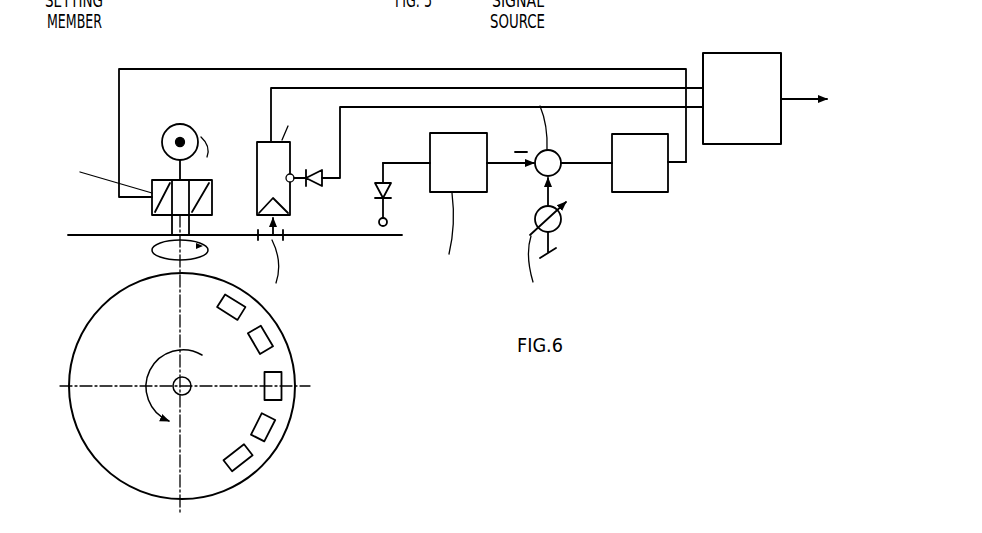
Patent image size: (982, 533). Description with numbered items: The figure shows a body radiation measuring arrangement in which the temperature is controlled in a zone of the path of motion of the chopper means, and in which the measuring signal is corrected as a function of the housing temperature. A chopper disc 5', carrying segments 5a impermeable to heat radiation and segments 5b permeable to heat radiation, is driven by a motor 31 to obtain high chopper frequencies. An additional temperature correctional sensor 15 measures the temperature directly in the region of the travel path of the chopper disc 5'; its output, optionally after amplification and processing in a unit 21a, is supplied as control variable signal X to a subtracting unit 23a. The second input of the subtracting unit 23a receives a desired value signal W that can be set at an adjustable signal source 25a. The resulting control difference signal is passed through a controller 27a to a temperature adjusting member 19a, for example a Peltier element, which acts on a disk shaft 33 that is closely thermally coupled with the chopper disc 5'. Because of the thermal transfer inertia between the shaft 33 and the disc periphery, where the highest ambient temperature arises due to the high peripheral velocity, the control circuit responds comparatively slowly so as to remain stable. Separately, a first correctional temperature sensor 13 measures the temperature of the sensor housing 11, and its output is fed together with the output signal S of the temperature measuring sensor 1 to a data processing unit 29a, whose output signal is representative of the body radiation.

The temperature measuring sensor 1 is at (462, 151).
The segments impermeable to heat radiation 5a is at (271, 405).
The segments permeable to heat radiation 5b is at (262, 342).
The chopper disc 5' is at (266, 279).
The sensor housing 11 is at (280, 156).
The first correctional temperature sensor 13 is at (322, 188).
The additional temperature correctional sensor 15 is at (392, 185).
The temperature adjusting member 19a is at (152, 207).
The amplification and processing unit 21a is at (467, 180).
The subtracting unit 23a is at (549, 155).
The adjustable signal source 25a is at (560, 226).
The controller 27a is at (639, 180).
The data processing unit 29a is at (738, 68).
The motor 31 is at (162, 141).
The disk shaft 33 is at (171, 226).